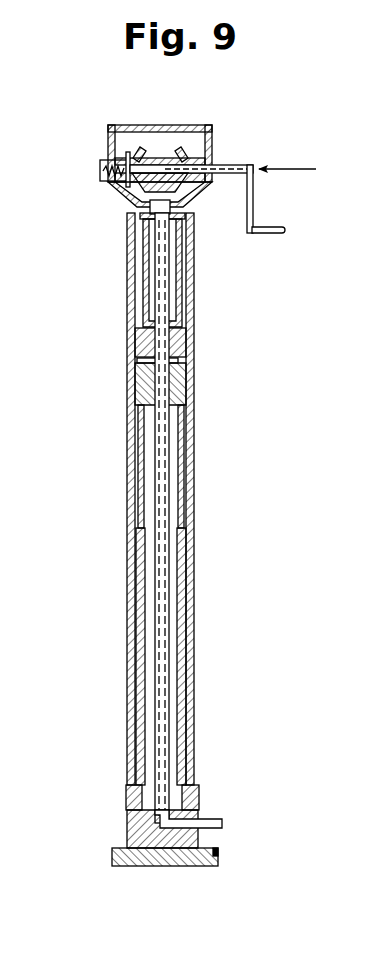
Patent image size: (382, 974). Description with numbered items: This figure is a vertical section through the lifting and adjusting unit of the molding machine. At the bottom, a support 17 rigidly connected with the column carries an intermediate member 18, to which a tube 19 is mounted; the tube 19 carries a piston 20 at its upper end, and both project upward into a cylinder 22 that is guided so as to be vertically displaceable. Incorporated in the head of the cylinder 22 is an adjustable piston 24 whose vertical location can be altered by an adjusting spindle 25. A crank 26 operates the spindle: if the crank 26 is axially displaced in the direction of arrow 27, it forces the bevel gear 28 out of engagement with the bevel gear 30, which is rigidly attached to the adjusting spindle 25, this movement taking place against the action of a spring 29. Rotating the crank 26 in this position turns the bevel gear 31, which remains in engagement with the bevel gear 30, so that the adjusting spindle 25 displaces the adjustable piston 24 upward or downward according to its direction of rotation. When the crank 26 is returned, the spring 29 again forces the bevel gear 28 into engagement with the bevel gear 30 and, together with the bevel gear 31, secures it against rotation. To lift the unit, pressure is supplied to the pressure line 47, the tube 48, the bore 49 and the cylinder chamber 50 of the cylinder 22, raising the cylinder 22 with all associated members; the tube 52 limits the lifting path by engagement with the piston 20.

The support 17 is at (200, 860).
The intermediate member 18 is at (127, 838).
The tube 19 is at (193, 637).
The piston 20 is at (180, 389).
The cylinder 22 is at (192, 485).
The adjustable piston 24 is at (175, 341).
The adjusting spindle 25 is at (160, 277).
The crank 26 is at (255, 213).
The arrow 27 is at (302, 168).
The bevel gear 28 is at (137, 150).
The spring 29 is at (101, 163).
The bevel gear 30 is at (132, 200).
The bevel gear 31 is at (208, 143).
The pressure line 47 is at (222, 823).
The tube 48 is at (158, 655).
The bore 49 is at (153, 392).
The cylinder chamber 50 is at (132, 365).
The tube 52 is at (130, 547).